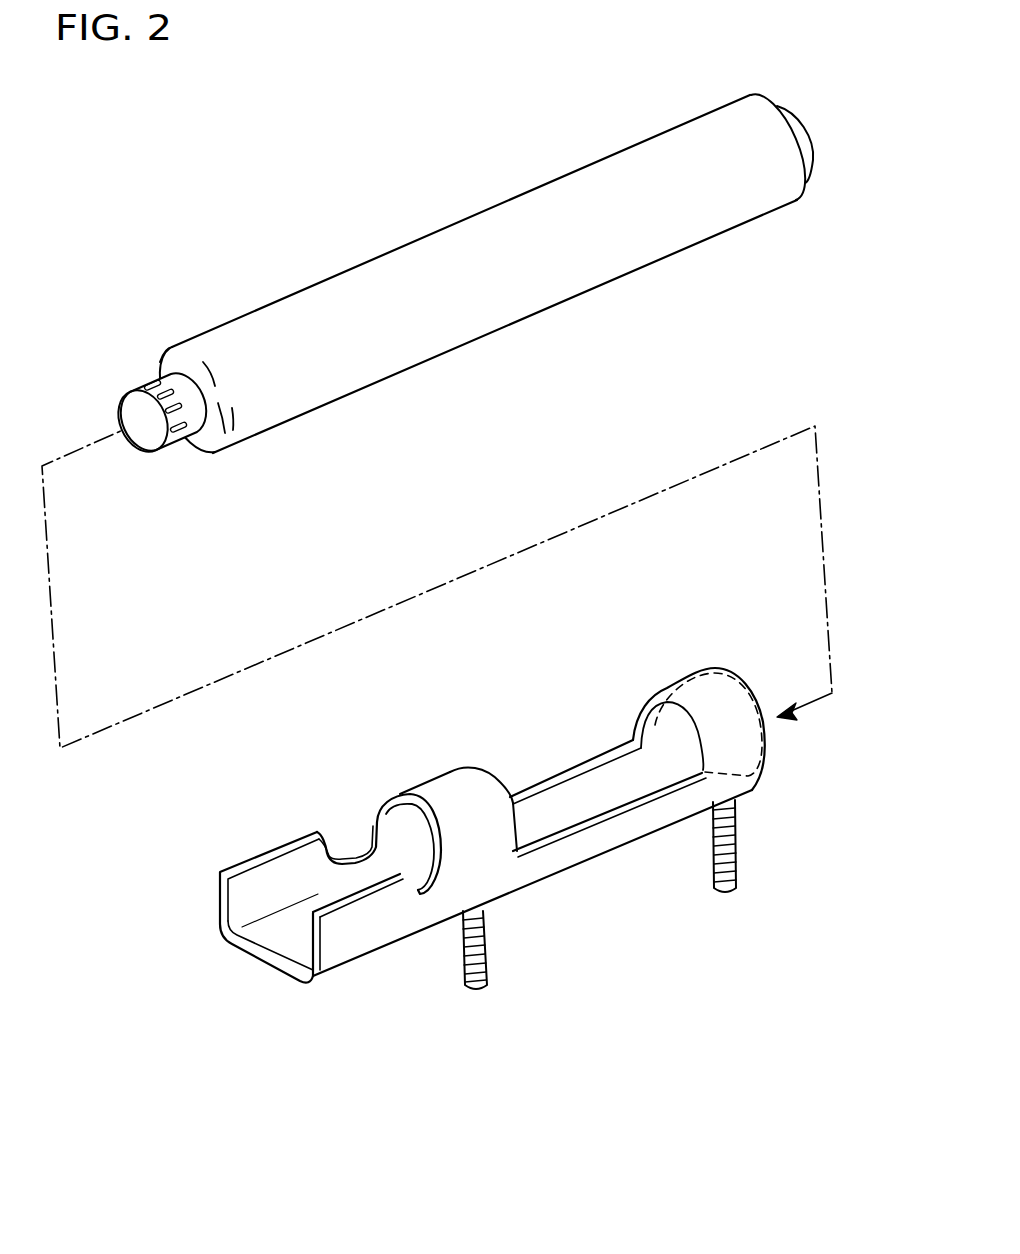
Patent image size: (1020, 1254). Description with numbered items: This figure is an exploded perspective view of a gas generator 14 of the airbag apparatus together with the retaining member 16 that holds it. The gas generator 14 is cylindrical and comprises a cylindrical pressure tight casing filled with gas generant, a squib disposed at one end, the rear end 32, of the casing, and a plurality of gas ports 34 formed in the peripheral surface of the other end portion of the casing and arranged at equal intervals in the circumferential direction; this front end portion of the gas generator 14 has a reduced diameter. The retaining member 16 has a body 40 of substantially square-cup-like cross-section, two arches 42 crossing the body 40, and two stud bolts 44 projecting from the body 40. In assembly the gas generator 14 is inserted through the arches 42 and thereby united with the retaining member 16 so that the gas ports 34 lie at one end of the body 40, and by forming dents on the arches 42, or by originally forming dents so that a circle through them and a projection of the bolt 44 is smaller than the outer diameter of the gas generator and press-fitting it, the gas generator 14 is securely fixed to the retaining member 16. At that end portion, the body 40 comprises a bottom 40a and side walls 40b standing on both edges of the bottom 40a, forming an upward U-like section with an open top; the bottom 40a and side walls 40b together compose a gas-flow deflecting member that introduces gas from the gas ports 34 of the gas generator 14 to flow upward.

The gas generator 14 is at (461, 278).
The one end (rear end) of the casing 32 is at (787, 113).
The gas ports 34 is at (177, 445).
The retaining member 16 is at (510, 847).
The body 40 is at (467, 847).
The bottom 40a is at (264, 938).
The side walls 40b is at (255, 888).
The arches 42 is at (436, 790).
The bolts (stud bolts) 44 is at (463, 967).